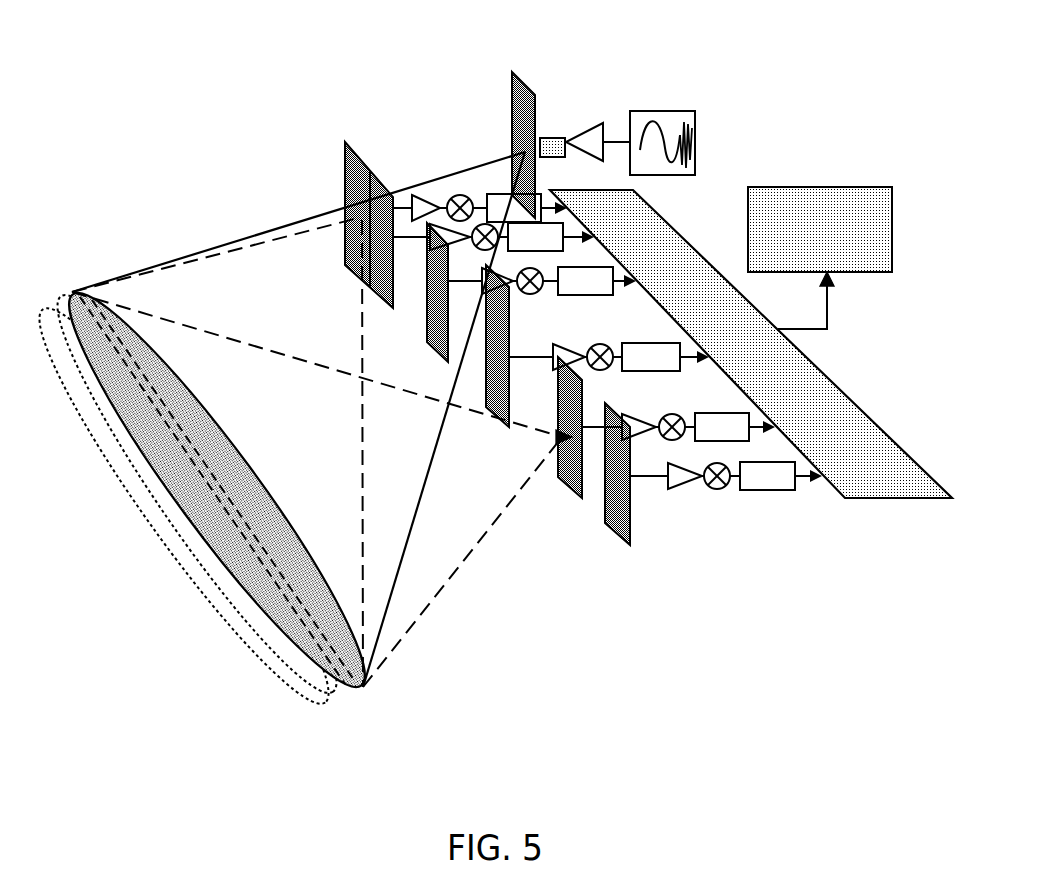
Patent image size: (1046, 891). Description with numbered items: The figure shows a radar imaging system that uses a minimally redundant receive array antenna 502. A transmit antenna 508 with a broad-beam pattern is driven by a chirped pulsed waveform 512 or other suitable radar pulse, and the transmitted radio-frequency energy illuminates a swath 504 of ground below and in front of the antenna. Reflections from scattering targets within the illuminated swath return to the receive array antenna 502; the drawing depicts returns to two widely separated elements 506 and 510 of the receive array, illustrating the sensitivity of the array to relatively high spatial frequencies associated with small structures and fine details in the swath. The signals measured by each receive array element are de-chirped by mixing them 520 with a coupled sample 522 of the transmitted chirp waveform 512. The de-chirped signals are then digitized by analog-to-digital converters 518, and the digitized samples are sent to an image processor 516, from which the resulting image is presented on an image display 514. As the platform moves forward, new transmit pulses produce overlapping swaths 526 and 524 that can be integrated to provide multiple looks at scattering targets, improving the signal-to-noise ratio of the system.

The minimally redundant receive array antenna 502 is at (330, 188).
The swath 504 is at (72, 290).
The receive array element 506 is at (360, 157).
The transmit antenna 508 is at (523, 82).
The receive array element 510 is at (562, 497).
The chirped pulsed waveform 512 is at (668, 110).
The image display 514 is at (781, 187).
The image processor 516 is at (847, 500).
The analog-to-digital converters 518 is at (790, 492).
The mixing 520 is at (708, 511).
The coupled sample 522 is at (553, 137).
The overlapping swath 524 is at (302, 692).
The overlapping swath 526 is at (347, 693).